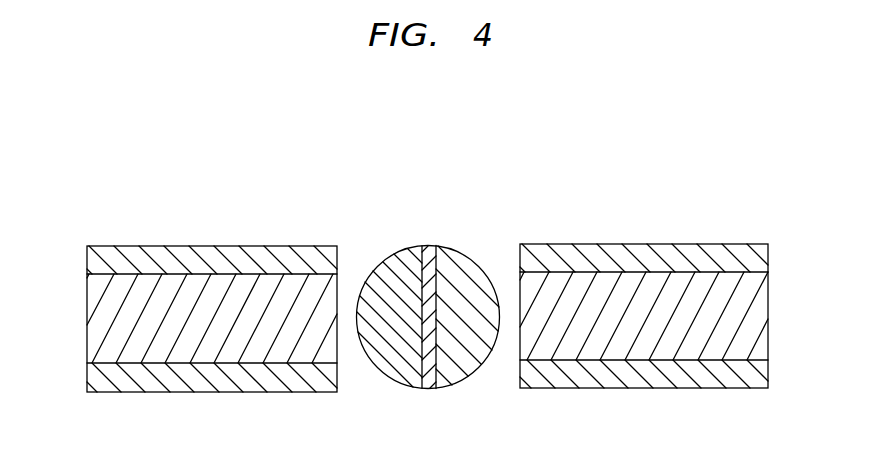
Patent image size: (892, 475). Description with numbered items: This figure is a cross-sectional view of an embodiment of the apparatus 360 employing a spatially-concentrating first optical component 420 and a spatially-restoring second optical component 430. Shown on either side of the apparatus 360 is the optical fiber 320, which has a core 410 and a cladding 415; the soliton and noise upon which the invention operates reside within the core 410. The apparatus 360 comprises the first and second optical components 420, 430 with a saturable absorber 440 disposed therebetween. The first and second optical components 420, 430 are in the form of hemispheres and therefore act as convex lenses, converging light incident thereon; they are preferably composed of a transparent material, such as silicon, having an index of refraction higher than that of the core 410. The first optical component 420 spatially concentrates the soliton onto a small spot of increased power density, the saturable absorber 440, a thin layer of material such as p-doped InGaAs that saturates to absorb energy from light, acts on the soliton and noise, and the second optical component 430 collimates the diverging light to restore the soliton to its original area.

The optical fiber 320 is at (655, 220).
The apparatus 360 is at (430, 164).
The core 410 is at (85, 325).
The cladding 415 is at (266, 248).
The first optical component 420 is at (390, 262).
The second optical component 430 is at (460, 258).
The saturable absorber 440 is at (430, 248).